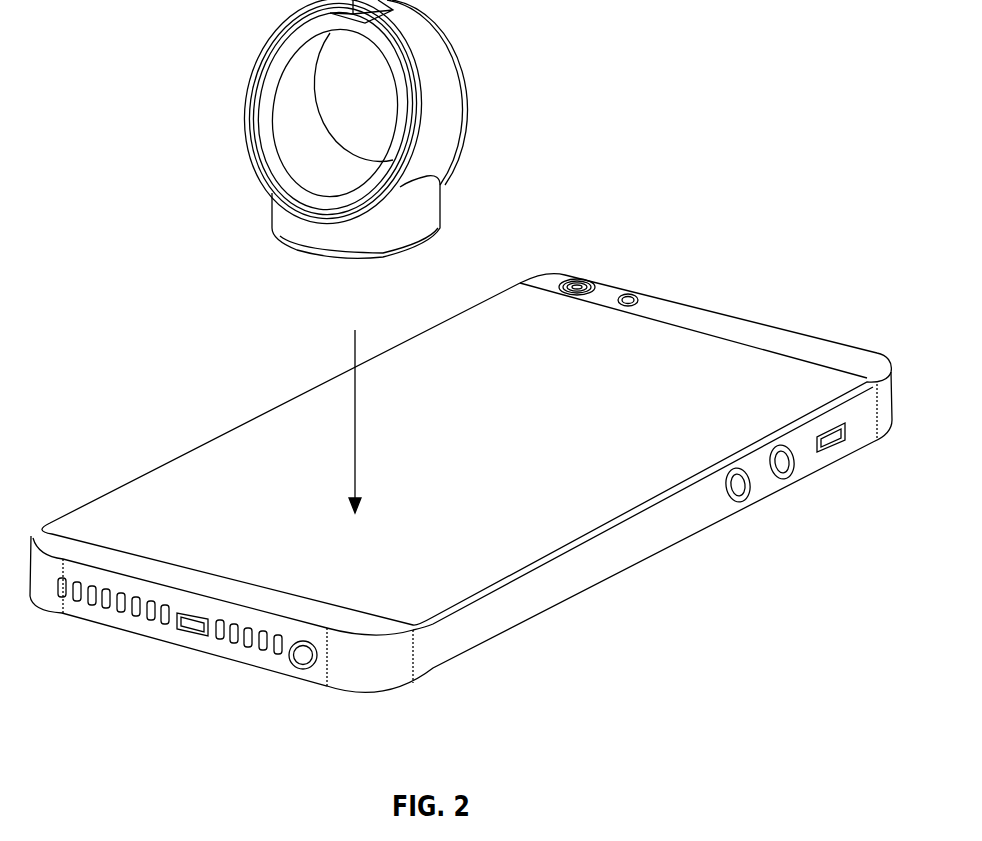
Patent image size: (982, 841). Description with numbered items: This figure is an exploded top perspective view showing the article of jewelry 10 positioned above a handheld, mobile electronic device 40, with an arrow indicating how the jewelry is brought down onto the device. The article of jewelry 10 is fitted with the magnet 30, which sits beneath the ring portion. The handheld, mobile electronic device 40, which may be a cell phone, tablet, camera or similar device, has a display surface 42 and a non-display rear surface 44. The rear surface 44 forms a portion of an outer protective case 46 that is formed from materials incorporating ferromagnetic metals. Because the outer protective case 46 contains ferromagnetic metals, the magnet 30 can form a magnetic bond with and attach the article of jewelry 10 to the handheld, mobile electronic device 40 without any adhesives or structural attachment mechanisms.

The article of jewelry 10 is at (450, 125).
The magnet 30 is at (296, 246).
The handheld, mobile electronic device 40 is at (461, 493).
The display surface 42 is at (483, 645).
The rear surface 44 is at (285, 437).
The outer protective case 46 is at (212, 488).